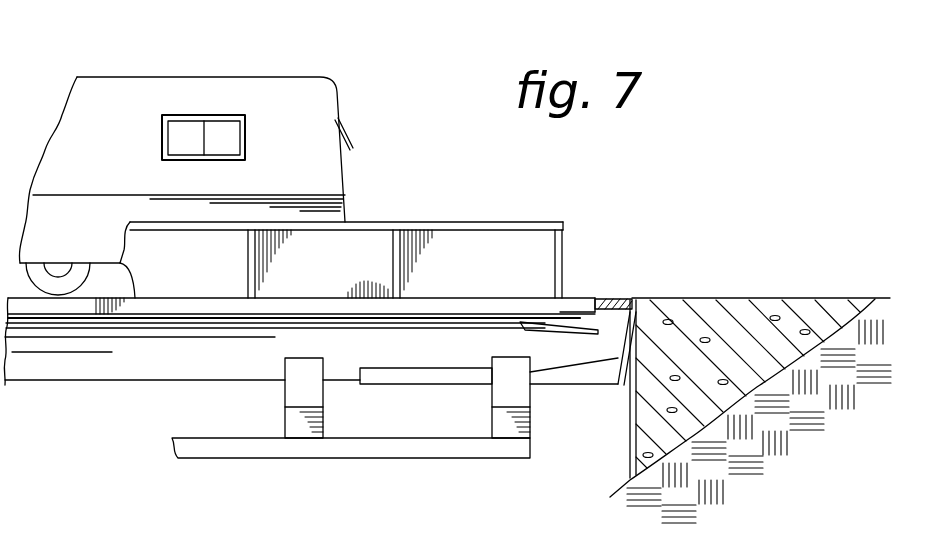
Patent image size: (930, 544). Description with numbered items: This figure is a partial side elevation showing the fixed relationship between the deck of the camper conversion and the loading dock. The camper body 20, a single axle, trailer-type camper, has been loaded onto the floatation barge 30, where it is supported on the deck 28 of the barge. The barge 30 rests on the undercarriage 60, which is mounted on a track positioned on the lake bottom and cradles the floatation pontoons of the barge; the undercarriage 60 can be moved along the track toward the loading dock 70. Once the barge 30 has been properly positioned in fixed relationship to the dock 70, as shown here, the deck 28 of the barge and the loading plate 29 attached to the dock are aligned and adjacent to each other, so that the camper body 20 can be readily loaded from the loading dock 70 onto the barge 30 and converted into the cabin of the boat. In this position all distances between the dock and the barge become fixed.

The camper body 20 is at (305, 98).
The floatation barge 30 is at (426, 222).
The deck 28 is at (575, 298).
The loading plate 29 is at (630, 300).
The undercarriage 60 is at (530, 438).
The loading dock 70 is at (713, 300).